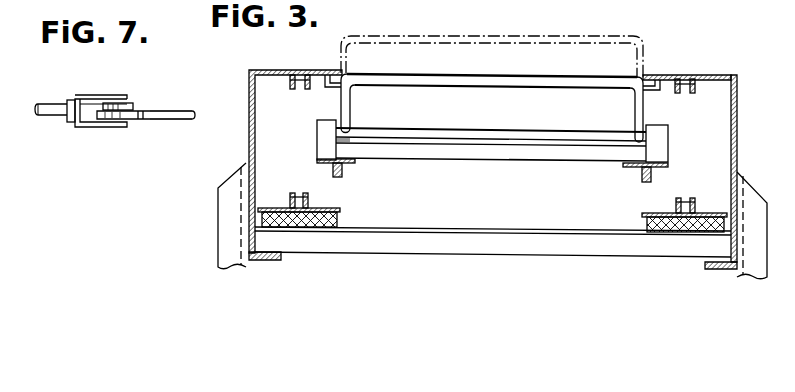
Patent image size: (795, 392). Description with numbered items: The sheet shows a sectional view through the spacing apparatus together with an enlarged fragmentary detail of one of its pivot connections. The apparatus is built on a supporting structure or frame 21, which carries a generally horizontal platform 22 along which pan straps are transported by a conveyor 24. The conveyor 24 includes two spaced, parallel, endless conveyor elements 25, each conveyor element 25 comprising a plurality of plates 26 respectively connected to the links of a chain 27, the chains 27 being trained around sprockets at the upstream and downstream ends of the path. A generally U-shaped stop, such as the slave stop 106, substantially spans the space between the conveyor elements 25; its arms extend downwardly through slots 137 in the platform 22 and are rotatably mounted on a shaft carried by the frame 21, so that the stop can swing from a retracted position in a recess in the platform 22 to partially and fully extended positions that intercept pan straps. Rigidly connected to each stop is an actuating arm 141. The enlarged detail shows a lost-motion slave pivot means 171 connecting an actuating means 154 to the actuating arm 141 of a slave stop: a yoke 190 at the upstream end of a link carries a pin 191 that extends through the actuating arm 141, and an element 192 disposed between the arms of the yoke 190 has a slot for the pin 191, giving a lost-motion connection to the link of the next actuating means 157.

In FIG. 3, the frame 21 is at (220, 212).
In FIG. 3, the platform 22 is at (522, 76).
In FIG. 3, the conveyor 24 is at (731, 77).
In FIG. 3, the conveyor element 25 is at (698, 77).
In FIG. 3, the plate 26 is at (277, 70).
In FIG. 3, the chain 27 is at (292, 88).
In FIG. 3, the slave stop 106 is at (583, 78).
In FIG. 3, the slot 137 is at (350, 77).
In FIG. 7, the actuating arm 141 is at (133, 109).
In FIG. 7, the actuating means 154 is at (52, 103).
In FIG. 7, the actuating means 157 is at (190, 109).
In FIG. 7, the lost-motion slave pivot means 171 is at (103, 95).
In FIG. 7, the yoke 190 is at (92, 123).
In FIG. 7, the pin 191 is at (122, 96).
In FIG. 7, the element 192 is at (141, 121).